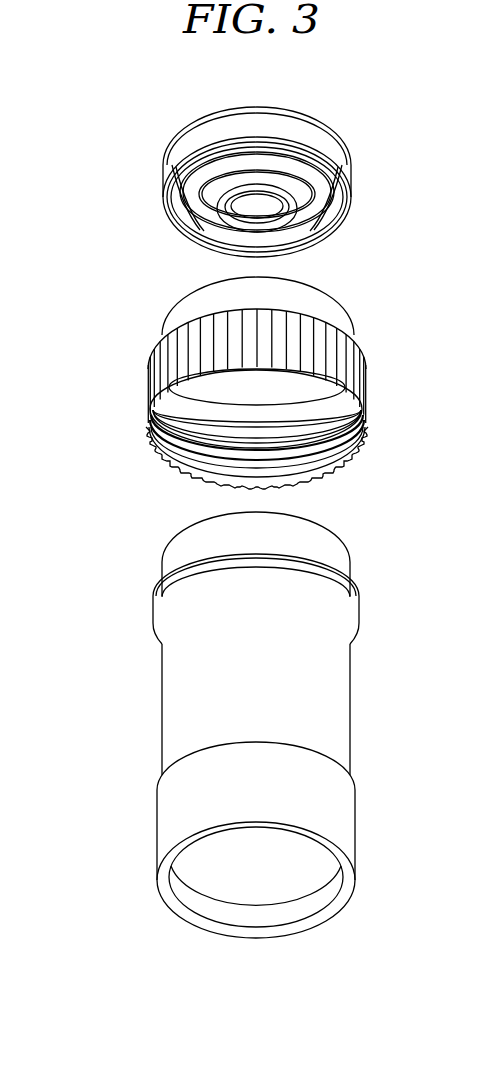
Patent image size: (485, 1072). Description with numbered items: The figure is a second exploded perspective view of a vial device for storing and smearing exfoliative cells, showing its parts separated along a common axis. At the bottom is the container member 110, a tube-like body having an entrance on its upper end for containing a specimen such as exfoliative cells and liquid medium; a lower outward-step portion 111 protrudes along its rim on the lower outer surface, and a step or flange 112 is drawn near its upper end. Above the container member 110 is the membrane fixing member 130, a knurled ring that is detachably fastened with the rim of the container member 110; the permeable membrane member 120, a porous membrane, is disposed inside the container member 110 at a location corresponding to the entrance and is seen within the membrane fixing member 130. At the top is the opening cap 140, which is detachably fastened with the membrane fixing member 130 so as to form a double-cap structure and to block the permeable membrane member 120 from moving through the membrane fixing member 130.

The container member 110 is at (356, 680).
The lower outward-step portion 111 is at (347, 827).
The flange of housing 112 is at (357, 606).
The permeable membrane member 120 is at (252, 383).
The membrane fixing member 130 is at (370, 371).
The opening cap 140 is at (357, 167).